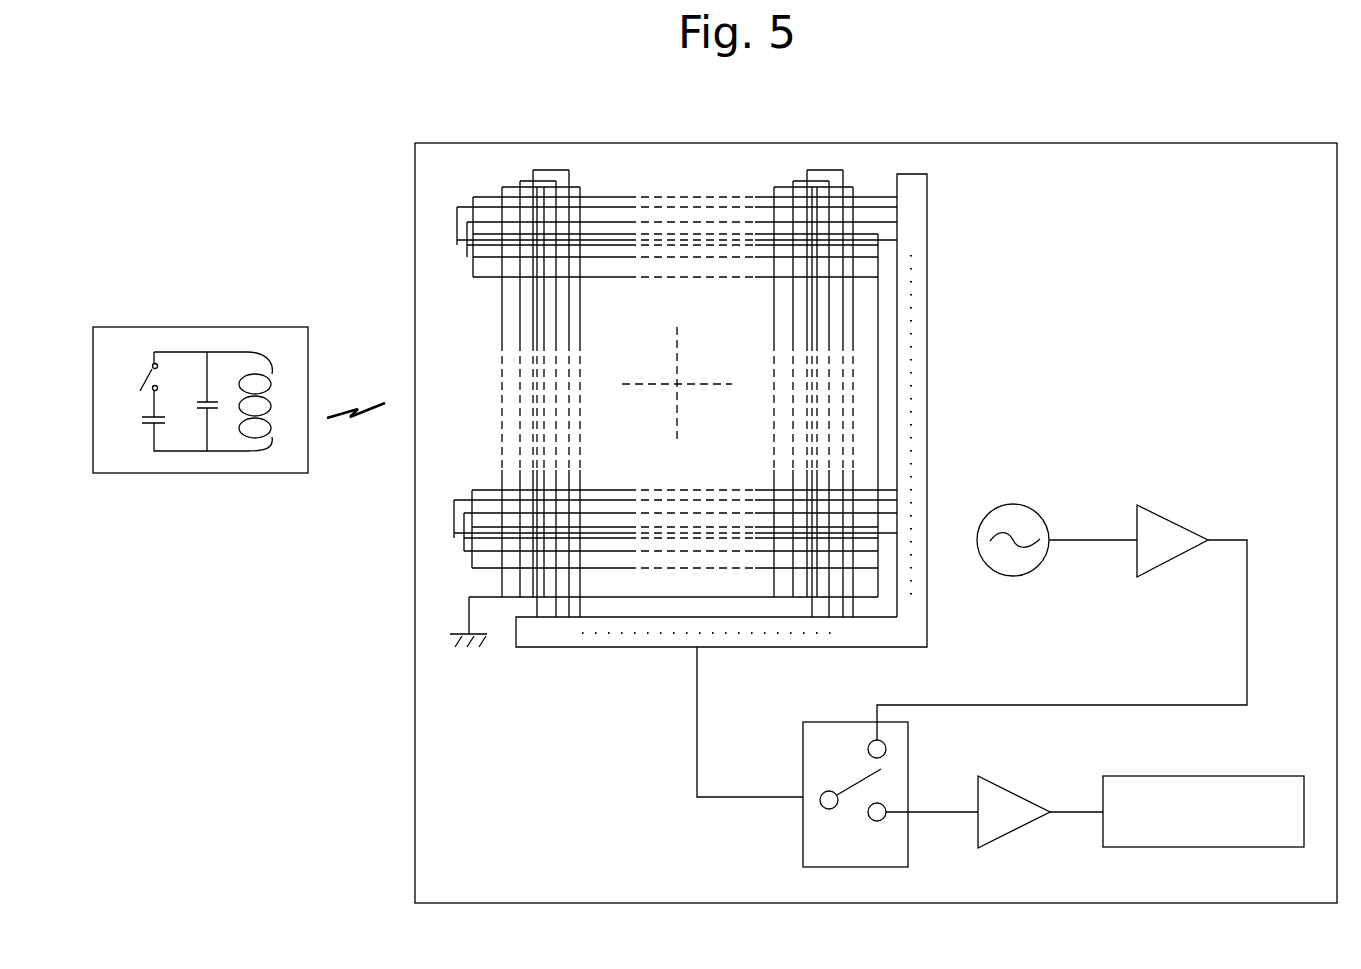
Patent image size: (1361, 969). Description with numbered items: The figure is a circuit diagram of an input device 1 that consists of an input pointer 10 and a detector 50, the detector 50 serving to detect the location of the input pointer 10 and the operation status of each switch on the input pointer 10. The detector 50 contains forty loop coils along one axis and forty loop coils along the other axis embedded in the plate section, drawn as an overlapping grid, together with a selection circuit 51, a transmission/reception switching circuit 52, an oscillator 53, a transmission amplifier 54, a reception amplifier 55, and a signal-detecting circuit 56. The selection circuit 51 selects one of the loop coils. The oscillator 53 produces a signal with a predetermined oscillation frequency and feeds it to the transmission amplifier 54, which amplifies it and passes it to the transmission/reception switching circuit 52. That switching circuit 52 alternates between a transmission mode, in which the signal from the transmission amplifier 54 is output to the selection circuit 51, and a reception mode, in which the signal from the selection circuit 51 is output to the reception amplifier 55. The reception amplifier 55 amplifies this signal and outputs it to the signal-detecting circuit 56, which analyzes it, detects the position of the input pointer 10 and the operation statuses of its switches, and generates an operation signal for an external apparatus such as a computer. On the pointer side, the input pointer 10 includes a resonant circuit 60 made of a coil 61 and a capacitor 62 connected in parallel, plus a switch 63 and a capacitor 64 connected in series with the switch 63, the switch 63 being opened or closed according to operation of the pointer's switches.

The input device 1 is at (960, 110).
The input pointer 10 is at (107, 327).
The detector 50 is at (1113, 143).
The selection circuit 51 is at (928, 367).
The transmission/reception switching circuit 52 is at (803, 831).
The oscillator 53 is at (1026, 505).
The transmission amplifier 54 is at (1176, 521).
The reception amplifier 55 is at (1011, 787).
The signal-detecting circuit 56 is at (1216, 776).
The resonant circuit 60 is at (222, 322).
The coil 61 is at (292, 372).
The capacitor 62 is at (193, 430).
The switch 63 is at (120, 372).
The capacitor 64 is at (120, 425).